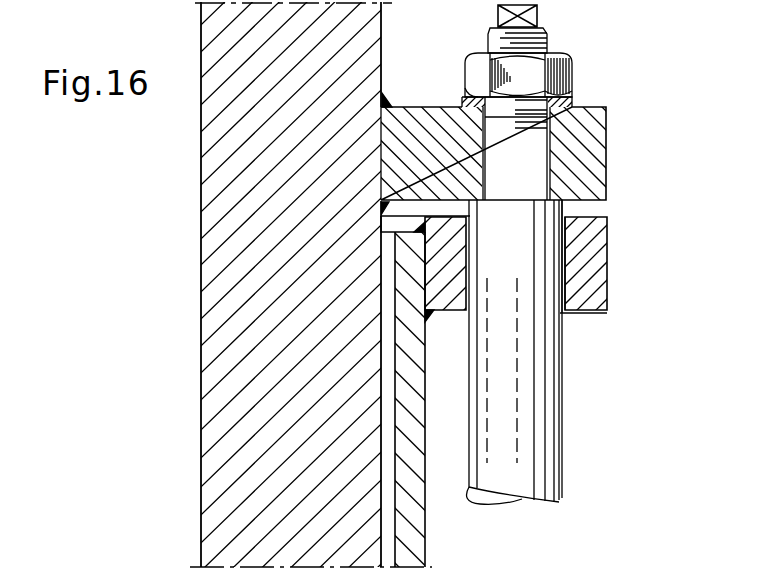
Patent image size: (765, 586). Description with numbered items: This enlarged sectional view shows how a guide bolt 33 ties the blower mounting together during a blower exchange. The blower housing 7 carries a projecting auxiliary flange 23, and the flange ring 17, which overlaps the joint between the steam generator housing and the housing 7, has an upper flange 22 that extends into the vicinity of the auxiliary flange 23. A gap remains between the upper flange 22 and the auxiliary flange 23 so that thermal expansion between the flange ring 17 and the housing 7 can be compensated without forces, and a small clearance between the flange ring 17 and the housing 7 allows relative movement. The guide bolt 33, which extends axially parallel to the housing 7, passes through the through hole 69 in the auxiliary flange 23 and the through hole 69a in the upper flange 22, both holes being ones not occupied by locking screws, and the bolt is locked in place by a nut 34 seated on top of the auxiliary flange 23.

The housing 7 is at (217, 288).
The flange ring 17 is at (412, 532).
The upper flange 22 is at (578, 278).
The auxiliary flange 23 is at (585, 176).
The guide bolt 33 is at (540, 385).
The nut 34 is at (562, 70).
The through hole 69 is at (547, 143).
The through hole 69a is at (568, 245).